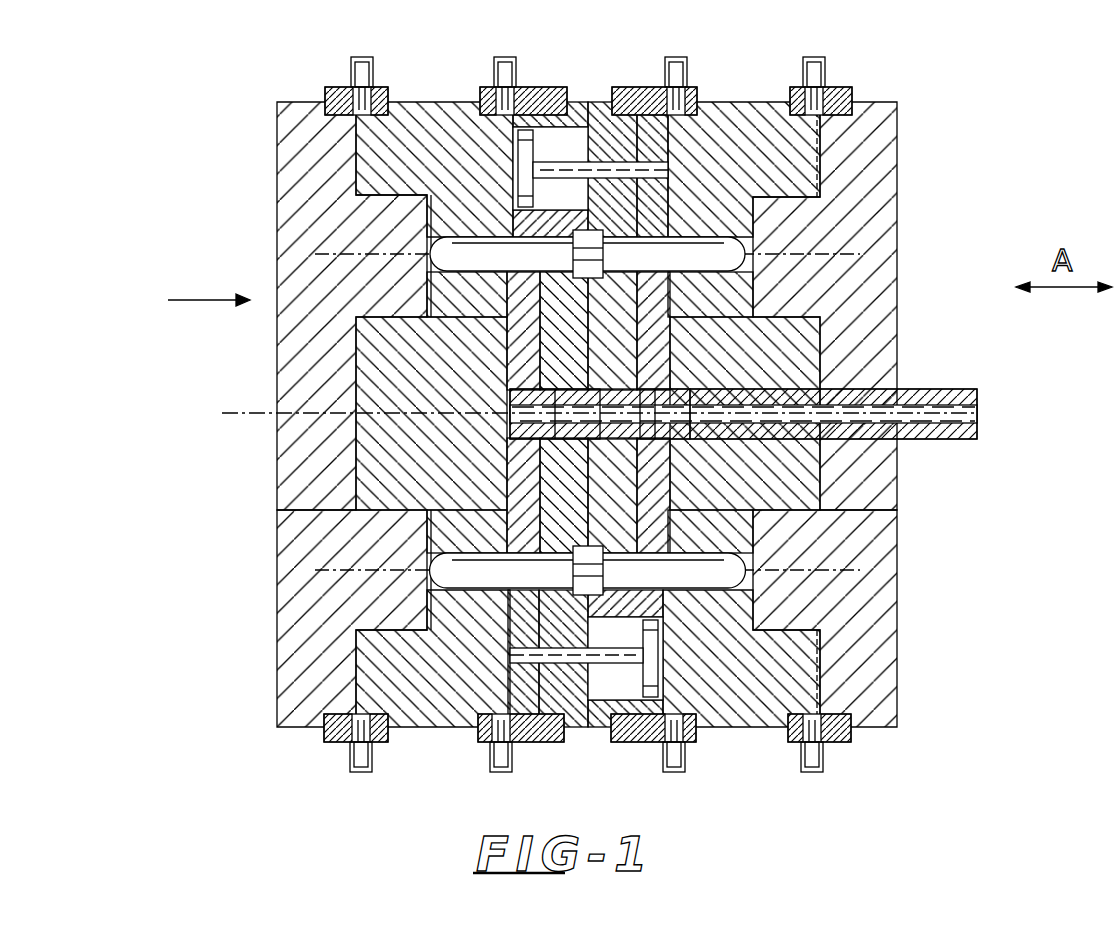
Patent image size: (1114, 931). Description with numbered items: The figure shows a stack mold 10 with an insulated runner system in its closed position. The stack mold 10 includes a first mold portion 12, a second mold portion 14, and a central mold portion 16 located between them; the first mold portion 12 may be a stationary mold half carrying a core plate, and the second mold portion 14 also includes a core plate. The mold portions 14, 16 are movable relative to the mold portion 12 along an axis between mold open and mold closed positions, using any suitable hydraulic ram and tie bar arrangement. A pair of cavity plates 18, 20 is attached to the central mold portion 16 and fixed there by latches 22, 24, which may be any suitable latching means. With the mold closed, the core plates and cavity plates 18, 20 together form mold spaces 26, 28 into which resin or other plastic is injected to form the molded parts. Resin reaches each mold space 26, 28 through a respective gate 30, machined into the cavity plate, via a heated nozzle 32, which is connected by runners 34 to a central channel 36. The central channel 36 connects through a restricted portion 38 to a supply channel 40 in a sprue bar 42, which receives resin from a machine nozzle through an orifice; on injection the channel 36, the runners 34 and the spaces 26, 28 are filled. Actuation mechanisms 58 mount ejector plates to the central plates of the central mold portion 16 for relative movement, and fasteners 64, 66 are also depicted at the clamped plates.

The stack mold 10 is at (185, 300).
The first mold portion 12 is at (888, 132).
The second mold portion 14 is at (290, 181).
The central mold portion 16 is at (596, 86).
The cavity plate 18 is at (446, 171).
The cavity plate 20 is at (738, 176).
The latch 22 is at (506, 57).
The latch 24 is at (678, 54).
The mold space 26 is at (765, 198).
The mold space 28 is at (440, 215).
The gate 30 is at (430, 262).
The heated nozzle 32 is at (481, 272).
The runner 34 is at (500, 356).
The central channel 36 is at (566, 440).
The restricted portion 38 is at (656, 440).
The supply channel 40 is at (984, 412).
The sprue bar 42 is at (947, 390).
The actuation mechanism 58 is at (506, 152).
The clamp bolt 64 is at (359, 55).
The clamp bolt 66 is at (815, 56).